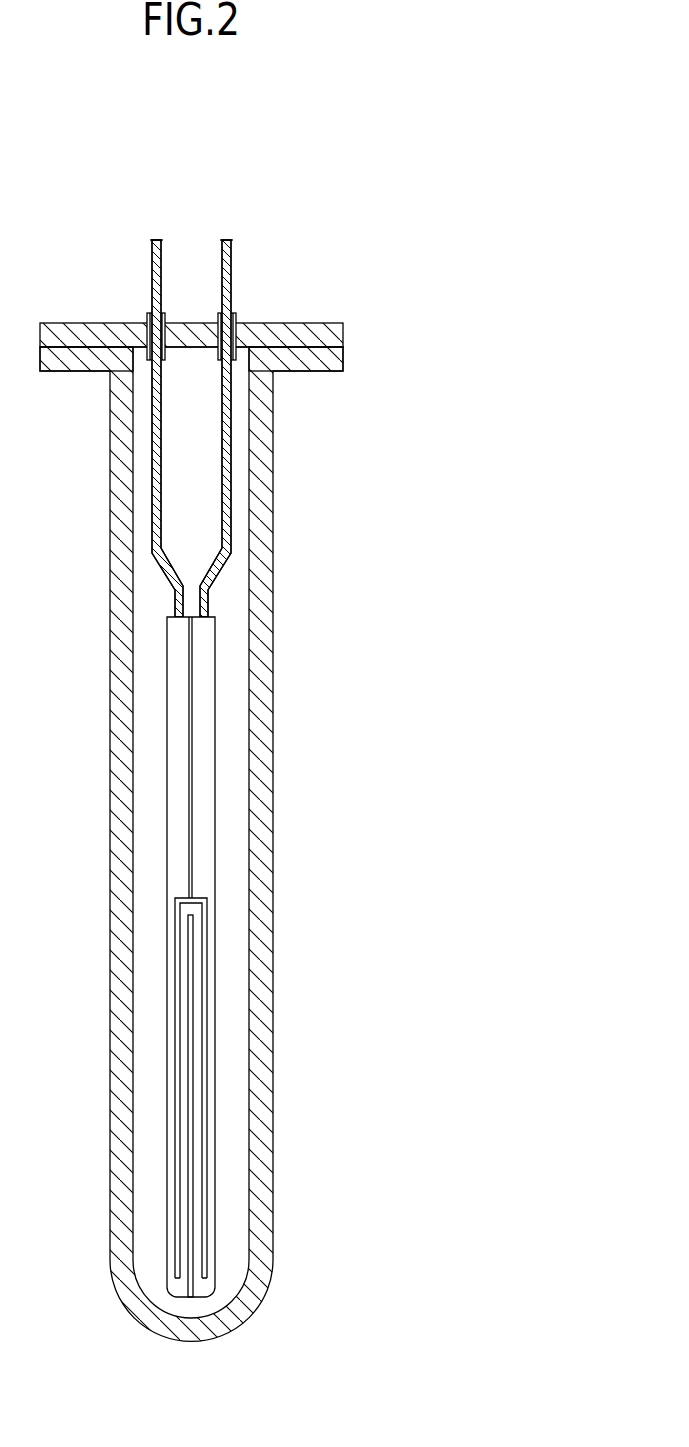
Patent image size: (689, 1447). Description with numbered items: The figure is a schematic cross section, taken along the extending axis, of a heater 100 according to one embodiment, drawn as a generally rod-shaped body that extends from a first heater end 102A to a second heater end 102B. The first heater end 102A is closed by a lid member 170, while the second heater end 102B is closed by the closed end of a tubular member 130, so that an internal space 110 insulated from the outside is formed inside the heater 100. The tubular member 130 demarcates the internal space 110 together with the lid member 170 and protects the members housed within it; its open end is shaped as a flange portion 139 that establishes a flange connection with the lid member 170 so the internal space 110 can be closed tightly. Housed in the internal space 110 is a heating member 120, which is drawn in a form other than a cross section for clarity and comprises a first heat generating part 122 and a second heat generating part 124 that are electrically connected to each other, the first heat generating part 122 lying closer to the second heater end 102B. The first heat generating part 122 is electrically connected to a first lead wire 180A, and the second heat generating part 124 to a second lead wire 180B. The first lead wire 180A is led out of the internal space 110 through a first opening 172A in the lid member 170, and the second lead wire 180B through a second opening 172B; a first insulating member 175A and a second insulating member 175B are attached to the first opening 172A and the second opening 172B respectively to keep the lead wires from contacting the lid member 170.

The heater 100 is at (485, 154).
The first heater end 102A is at (338, 310).
The second heater end 102B is at (252, 1347).
The internal space 110 is at (240, 428).
The heating member 120 is at (432, 815).
The first heat generating part 122 is at (213, 980).
The second heat generating part 124 is at (215, 827).
The tubular member 130 is at (275, 487).
The flange portion 139 is at (343, 358).
The lid member 170 is at (343, 330).
The first opening 172A is at (214, 320).
The second opening 172B is at (169, 320).
The first insulating member 175A is at (236, 318).
The second insulating member 175B is at (147, 318).
The first lead wire 180A is at (231, 263).
The second lead wire 180B is at (152, 263).